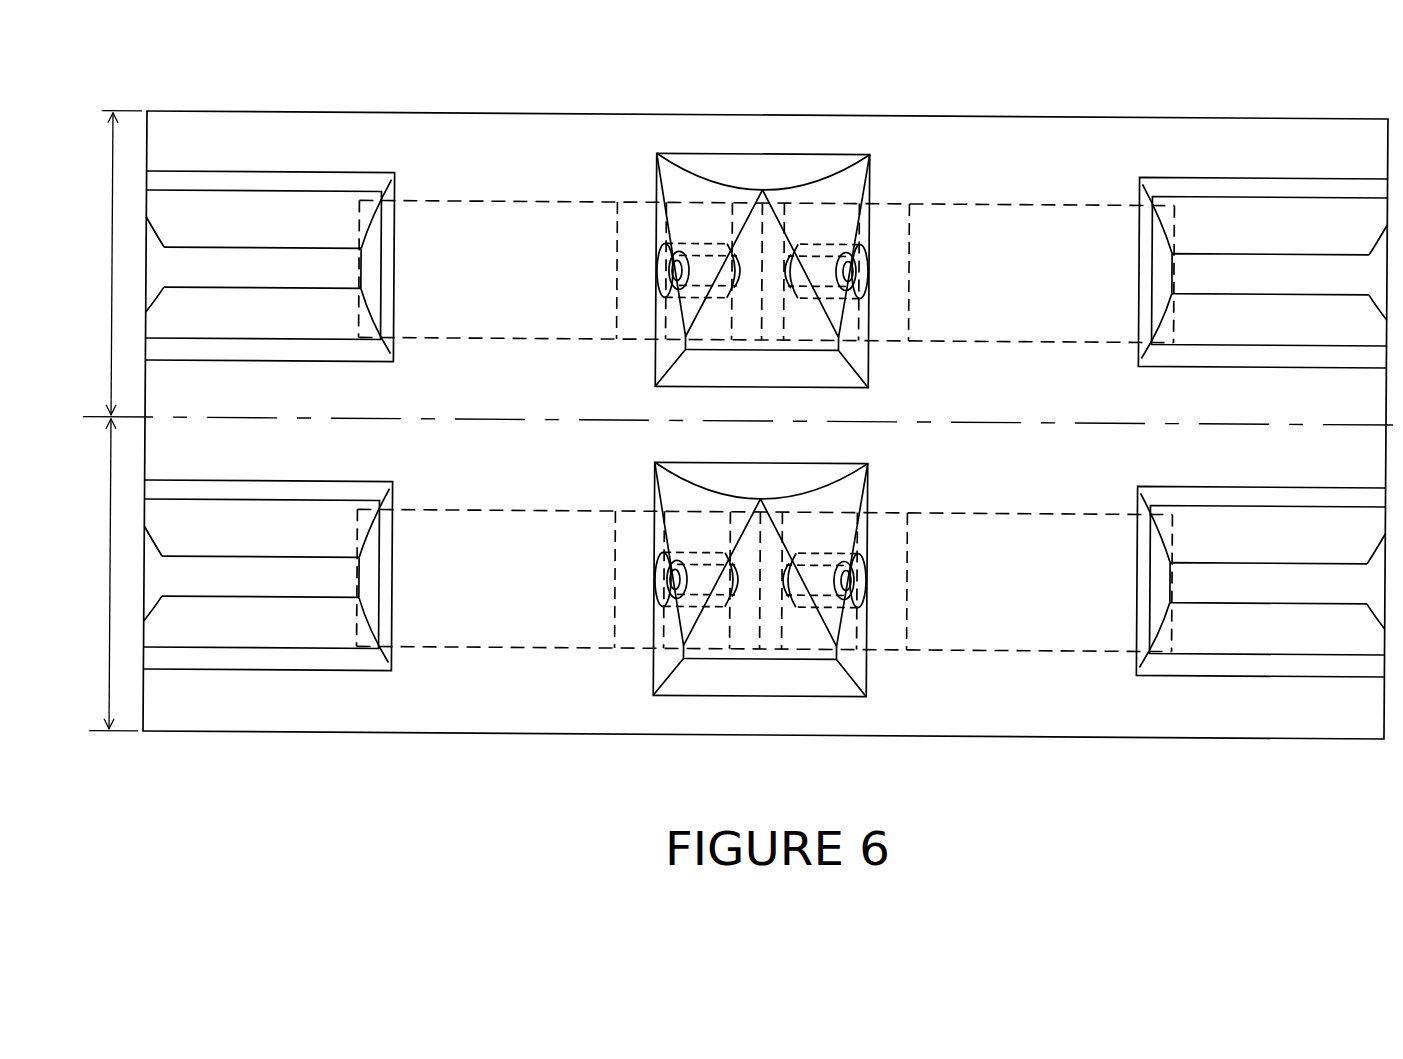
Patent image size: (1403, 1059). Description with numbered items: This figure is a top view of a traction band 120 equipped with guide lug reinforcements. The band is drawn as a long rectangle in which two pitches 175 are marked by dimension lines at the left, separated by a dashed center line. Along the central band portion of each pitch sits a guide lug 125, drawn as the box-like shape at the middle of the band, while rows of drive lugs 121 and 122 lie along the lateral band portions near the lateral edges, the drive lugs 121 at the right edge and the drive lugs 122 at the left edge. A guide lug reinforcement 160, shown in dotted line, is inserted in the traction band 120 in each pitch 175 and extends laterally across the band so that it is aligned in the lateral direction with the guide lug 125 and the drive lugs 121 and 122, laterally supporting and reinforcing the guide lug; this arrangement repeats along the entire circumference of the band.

The traction band 120 is at (467, 108).
The drive lug 121 is at (1173, 480).
The drive lug 122 is at (364, 368).
The guide lug 125 is at (878, 361).
The guide lug reinforcement 160 is at (968, 198).
The pitch 175 is at (112, 421).